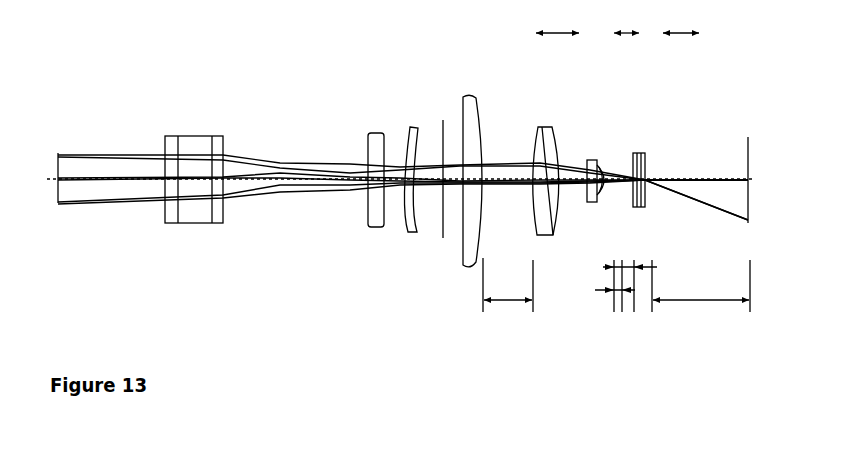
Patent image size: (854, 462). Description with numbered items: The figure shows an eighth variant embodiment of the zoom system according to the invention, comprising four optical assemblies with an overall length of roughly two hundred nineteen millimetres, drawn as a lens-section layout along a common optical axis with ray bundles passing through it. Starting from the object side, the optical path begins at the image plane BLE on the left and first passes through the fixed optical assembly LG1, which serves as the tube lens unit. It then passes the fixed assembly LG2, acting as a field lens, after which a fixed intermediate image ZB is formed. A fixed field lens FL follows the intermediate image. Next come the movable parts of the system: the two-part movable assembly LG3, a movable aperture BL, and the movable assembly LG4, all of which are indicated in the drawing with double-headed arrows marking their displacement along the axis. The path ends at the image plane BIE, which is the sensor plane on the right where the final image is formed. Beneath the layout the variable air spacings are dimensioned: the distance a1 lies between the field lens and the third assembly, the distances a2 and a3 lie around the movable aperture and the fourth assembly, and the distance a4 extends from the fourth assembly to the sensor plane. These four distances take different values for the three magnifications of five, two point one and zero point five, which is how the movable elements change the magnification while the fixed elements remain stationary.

The image plane BLE is at (58, 169).
The fixed optical assembly LG1 is at (200, 128).
The fixed assembly LG2 is at (428, 118).
The intermediate image ZB is at (447, 112).
The field lens FL is at (483, 107).
The movable assembly LG3 is at (610, 120).
The movable aperture BL is at (613, 163).
The movable assembly LG4 is at (638, 145).
The image plane BIE is at (742, 152).
The air gap distance a1 is at (508, 306).
The air gap distance a2 is at (612, 307).
The air gap distance a3 is at (630, 307).
The air gap distance a4 is at (701, 307).